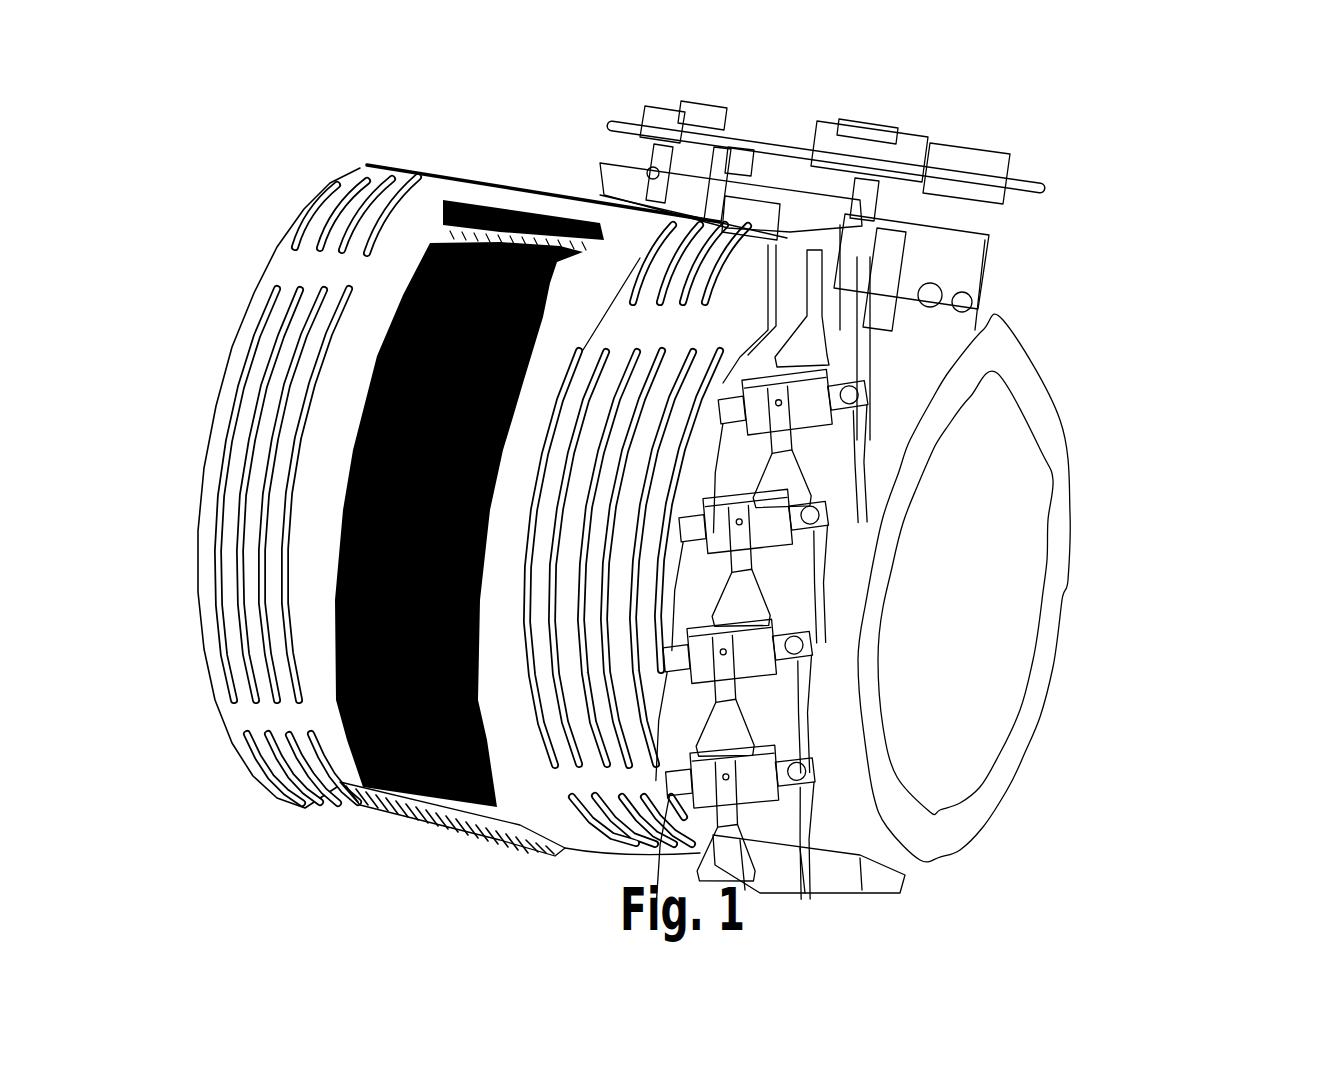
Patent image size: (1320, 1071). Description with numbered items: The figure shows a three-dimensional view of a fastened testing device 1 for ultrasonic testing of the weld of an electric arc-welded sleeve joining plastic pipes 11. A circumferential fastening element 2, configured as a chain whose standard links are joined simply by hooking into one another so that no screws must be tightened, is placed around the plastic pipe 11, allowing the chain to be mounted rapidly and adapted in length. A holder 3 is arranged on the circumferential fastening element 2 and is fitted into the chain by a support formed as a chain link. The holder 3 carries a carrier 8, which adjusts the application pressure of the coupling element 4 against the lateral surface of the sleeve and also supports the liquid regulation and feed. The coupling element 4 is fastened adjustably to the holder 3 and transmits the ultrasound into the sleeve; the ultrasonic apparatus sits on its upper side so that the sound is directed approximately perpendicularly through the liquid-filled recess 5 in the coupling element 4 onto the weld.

The testing device 1 is at (1066, 139).
The circumferential fastening element 2 is at (835, 471).
The holder 3 is at (1050, 274).
The coupling element 4 is at (583, 156).
The recess 5 is at (783, 106).
The carrier 8 is at (920, 131).
The plastic pipe 11 is at (1095, 532).